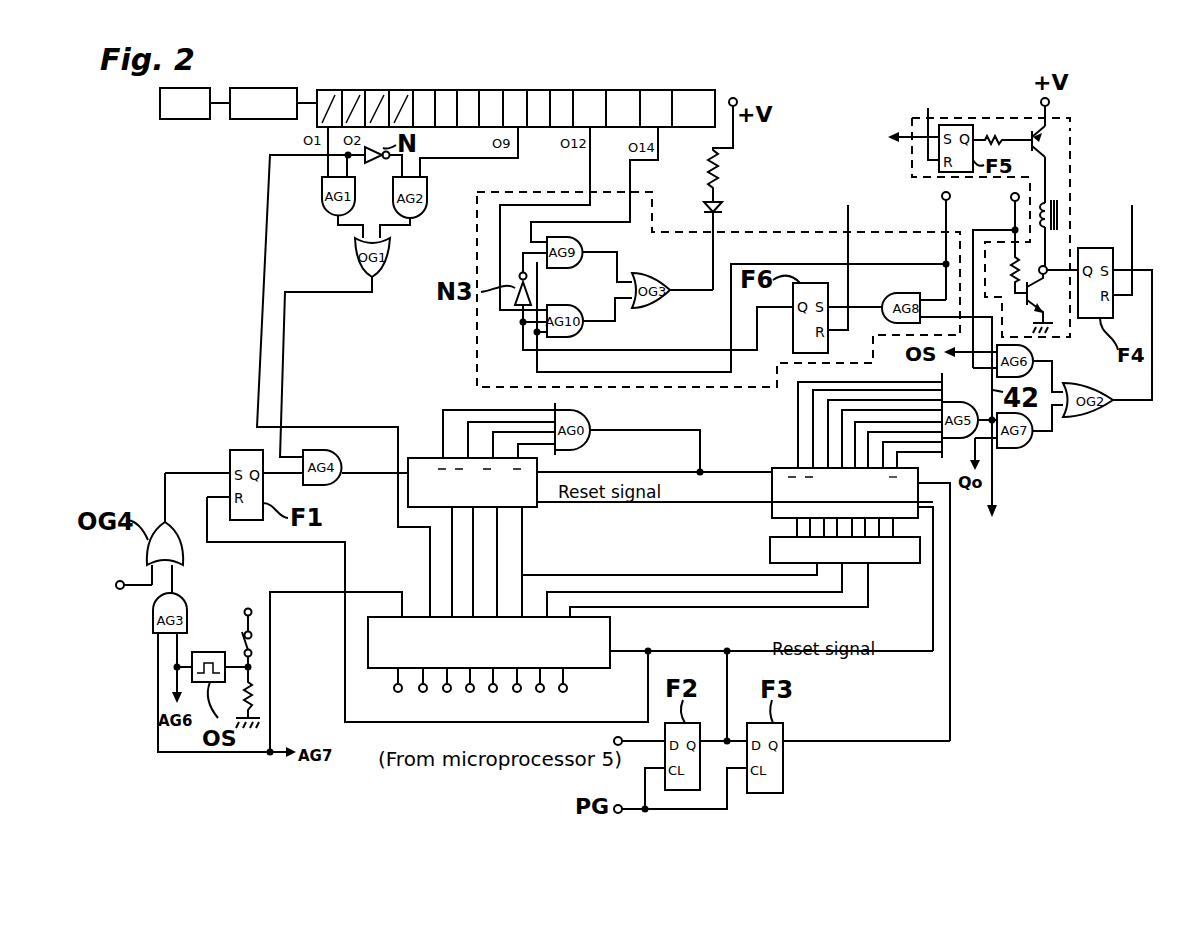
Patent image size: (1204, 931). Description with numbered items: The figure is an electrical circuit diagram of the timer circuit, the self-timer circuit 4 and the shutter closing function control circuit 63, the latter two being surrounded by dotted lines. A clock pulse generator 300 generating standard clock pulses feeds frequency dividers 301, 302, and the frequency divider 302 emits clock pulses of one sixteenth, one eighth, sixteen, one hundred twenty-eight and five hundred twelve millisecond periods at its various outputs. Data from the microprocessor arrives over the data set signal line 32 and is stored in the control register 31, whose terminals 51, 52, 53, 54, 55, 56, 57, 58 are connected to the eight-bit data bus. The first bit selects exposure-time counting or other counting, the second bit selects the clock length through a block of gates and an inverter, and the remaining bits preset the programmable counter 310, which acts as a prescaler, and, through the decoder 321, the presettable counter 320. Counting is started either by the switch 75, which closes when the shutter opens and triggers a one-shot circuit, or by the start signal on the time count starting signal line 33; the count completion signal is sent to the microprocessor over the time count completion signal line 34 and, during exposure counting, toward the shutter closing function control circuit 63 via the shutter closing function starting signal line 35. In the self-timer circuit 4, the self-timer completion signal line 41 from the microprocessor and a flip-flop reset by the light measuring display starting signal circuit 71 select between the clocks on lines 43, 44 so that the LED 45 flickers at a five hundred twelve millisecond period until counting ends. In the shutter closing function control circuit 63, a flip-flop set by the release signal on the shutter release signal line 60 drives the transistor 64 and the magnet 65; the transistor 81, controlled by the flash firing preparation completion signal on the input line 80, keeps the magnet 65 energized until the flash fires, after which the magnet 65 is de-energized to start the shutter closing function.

The clock pulse generator 300 is at (178, 119).
The frequency divider 301 is at (260, 119).
The frequency divider 302 is at (575, 90).
The programmable counter 310 is at (560, 507).
The presettable counter 320 is at (775, 468).
The decoder 321 is at (890, 563).
The control register 31 is at (382, 648).
The data set signal line 32 is at (621, 740).
The time count starting signal line 33 is at (116, 584).
The time count completion signal line 34 is at (990, 527).
The shutter closing function starting signal line 35 is at (1047, 268).
The self-timer completion signal line 41 is at (925, 241).
The self-timer circuit 4 is at (477, 358).
The signal line 43 is at (588, 170).
The signal line 44 is at (632, 172).
The LED 45 is at (722, 204).
The terminal 51 is at (398, 692).
The terminal 52 is at (423, 692).
The terminal 53 is at (447, 692).
The terminal 54 is at (471, 692).
The terminal 55 is at (493, 692).
The terminal 56 is at (517, 692).
The terminal 57 is at (540, 692).
The terminal 58 is at (563, 692).
The shutter release signal line 60 is at (894, 137).
The shutter closing function control circuit 63 is at (1070, 130).
The transistor 64 is at (1048, 133).
The magnet 65 is at (1048, 205).
The light measuring display starting signal circuit 71 is at (848, 197).
The switch 75 is at (252, 645).
The input line 80 is at (1002, 238).
The transistor 81 is at (1048, 310).